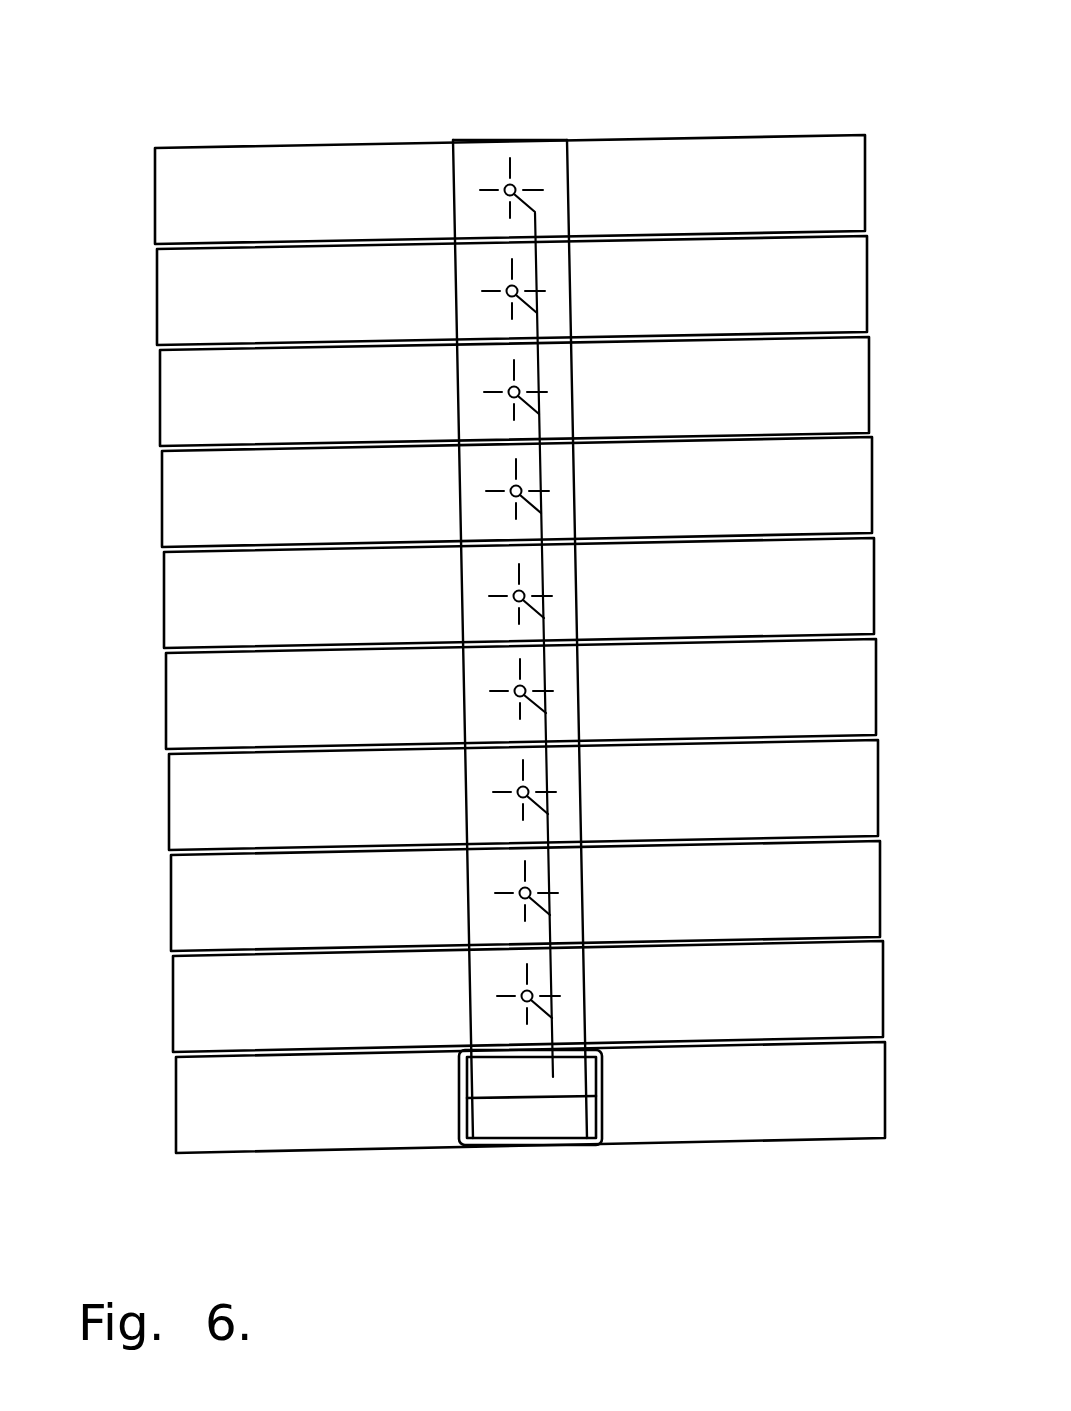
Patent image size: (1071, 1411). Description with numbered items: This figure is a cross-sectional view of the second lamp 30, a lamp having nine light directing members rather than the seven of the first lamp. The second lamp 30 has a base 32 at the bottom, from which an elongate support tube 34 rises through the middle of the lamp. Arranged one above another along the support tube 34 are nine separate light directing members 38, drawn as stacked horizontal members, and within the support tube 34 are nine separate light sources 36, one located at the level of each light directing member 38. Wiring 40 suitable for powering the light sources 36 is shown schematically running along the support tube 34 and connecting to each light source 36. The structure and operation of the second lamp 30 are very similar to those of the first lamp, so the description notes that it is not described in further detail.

The second lamp 30 is at (788, 93).
The base 32 is at (755, 1115).
The elongate support tube 34 is at (570, 170).
The light sources 36 is at (505, 194).
The light directing members 38 is at (815, 207).
The wiring 40 is at (542, 360).